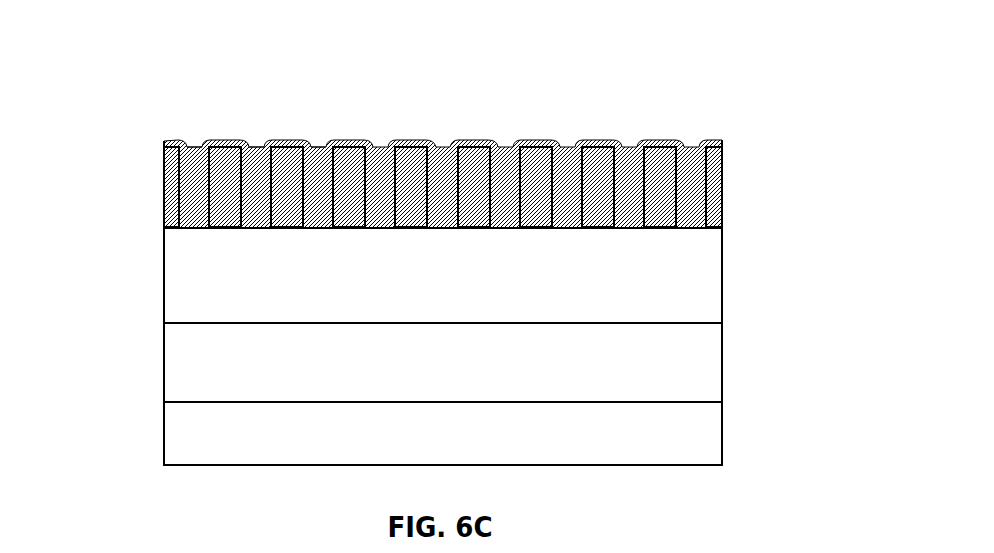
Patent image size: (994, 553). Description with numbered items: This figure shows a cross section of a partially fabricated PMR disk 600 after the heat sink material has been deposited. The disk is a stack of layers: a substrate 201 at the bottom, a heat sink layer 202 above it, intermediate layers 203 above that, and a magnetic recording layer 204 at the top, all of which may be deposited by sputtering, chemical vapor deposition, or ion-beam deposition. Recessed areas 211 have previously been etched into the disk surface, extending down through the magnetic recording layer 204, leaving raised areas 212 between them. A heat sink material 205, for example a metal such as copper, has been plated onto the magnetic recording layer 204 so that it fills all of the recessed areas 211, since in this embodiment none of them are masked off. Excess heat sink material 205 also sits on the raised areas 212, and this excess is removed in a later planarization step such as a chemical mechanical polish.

The partially fabricated PMR disk 600 is at (148, 373).
The magnetic recording layer 204 is at (723, 175).
The heat sink material 205 is at (660, 137).
The raised areas 212 is at (604, 129).
The recessed areas 211 is at (321, 143).
The intermediate layers 203 is at (557, 286).
The heat sink layer 202 is at (538, 374).
The substrate 201 is at (508, 446).